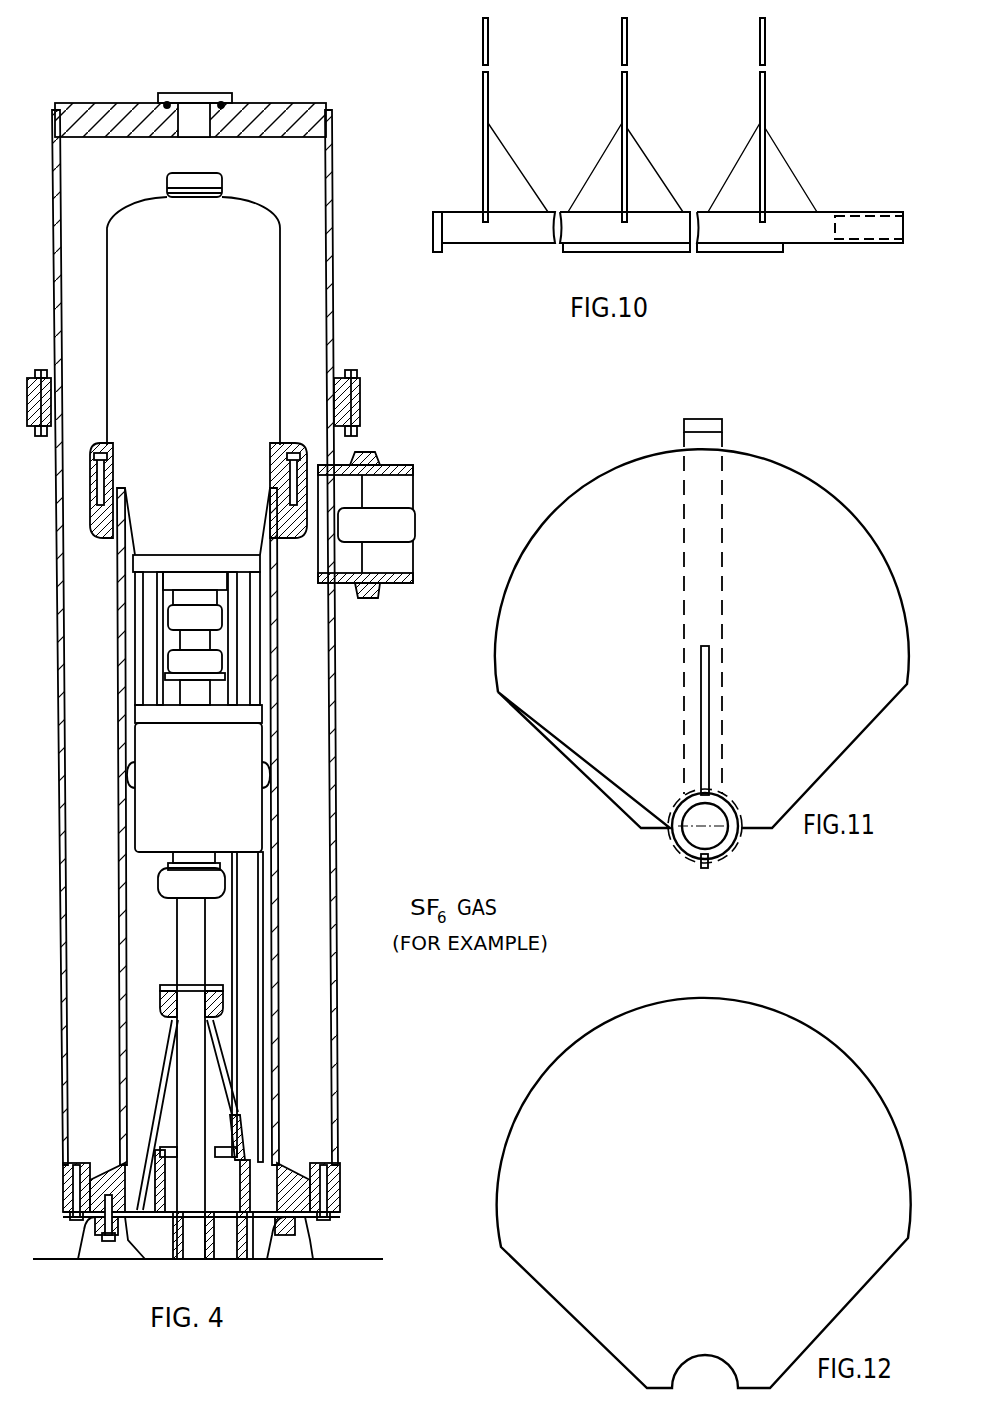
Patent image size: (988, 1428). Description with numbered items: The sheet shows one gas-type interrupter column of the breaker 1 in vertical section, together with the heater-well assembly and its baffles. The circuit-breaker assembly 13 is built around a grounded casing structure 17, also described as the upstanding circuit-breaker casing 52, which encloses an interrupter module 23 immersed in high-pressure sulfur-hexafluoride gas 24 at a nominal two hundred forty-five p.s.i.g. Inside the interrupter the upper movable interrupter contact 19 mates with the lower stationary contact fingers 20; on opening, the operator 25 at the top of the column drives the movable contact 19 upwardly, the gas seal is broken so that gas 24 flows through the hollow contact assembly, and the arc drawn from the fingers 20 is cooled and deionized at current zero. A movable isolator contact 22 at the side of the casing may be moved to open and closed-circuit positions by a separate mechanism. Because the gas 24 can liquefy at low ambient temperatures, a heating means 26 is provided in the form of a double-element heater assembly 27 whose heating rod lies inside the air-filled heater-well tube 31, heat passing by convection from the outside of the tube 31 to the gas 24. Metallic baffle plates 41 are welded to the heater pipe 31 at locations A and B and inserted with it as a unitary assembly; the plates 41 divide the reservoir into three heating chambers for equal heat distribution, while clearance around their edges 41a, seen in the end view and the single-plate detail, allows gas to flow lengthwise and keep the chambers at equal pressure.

In FIG. 4, the breaker 1 is at (342, 298).
In FIG. 4, the circuit-breaker assembly 13 is at (85, 86).
In FIG. 4, the casing structure 17 is at (334, 852).
In FIG. 4, the movable interrupter contact 19 is at (192, 637).
In FIG. 4, the stationary contact fingers 20 is at (173, 657).
In FIG. 4, the movable isolator contact 22 is at (411, 526).
In FIG. 4, the interrupter module 23 is at (202, 790).
In FIG. 4, the sulfur-hexafluoride gas 24 is at (310, 915).
In FIG. 4, the operator 25 is at (250, 363).
In FIG. 10, the heating means 26 is at (505, 246).
In FIG. 10, the double-element heater assembly 27 is at (725, 232).
In FIG. 10, the heater-well tube 31 is at (455, 212).
In FIG. 10, the metallic baffle plate 41 is at (761, 106).
In FIG. 11, the metallic baffle plate 41 is at (836, 762).
In FIG. 12, the metallic baffle plate 41 is at (797, 1032).
In FIG. 11, the baffle edge 41a is at (554, 499).
In FIG. 12, the baffle edge 41a is at (534, 1087).
In FIG. 4, the upstanding circuit-breaker casing 52 is at (122, 1057).
In FIG. 10, the barrier location A is at (627, 95).
In FIG. 10, the barrier location B is at (765, 106).